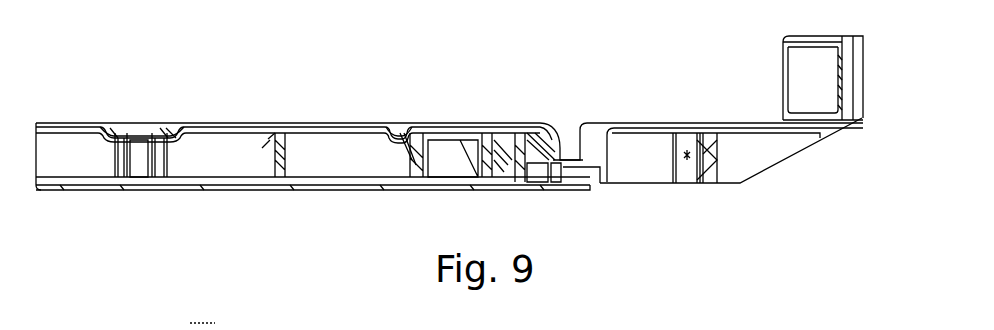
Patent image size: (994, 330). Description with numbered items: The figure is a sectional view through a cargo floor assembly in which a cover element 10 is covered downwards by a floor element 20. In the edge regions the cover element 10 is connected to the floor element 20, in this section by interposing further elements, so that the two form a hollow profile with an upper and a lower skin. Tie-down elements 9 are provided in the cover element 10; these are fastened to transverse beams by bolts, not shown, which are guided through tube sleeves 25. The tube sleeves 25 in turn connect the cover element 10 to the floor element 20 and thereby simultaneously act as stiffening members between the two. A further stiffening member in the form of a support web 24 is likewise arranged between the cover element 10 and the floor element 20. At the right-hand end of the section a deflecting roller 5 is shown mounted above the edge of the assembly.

The deflecting roller 5 is at (778, 68).
The tie-down element 9 is at (153, 122).
The cover element 10 is at (323, 122).
The floor element 20 is at (260, 193).
The support web 24 is at (279, 143).
The tube sleeve 25 is at (167, 170).